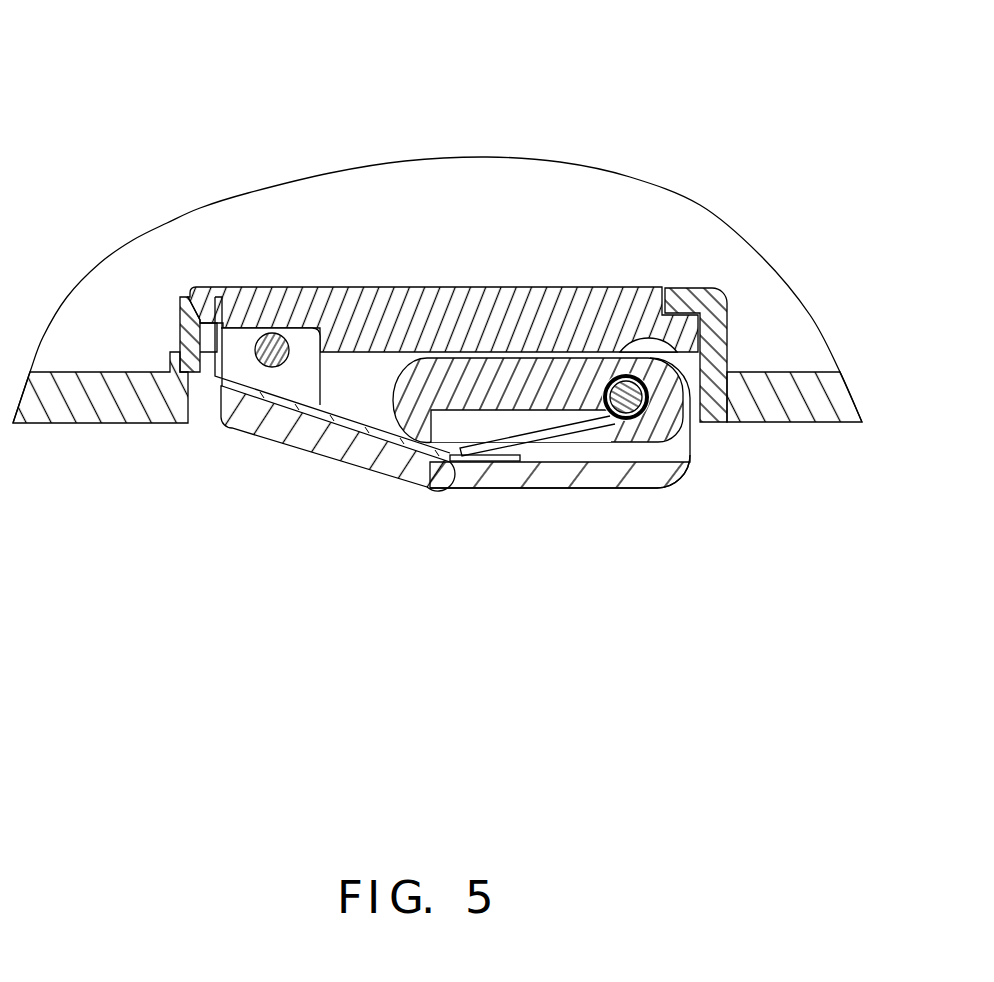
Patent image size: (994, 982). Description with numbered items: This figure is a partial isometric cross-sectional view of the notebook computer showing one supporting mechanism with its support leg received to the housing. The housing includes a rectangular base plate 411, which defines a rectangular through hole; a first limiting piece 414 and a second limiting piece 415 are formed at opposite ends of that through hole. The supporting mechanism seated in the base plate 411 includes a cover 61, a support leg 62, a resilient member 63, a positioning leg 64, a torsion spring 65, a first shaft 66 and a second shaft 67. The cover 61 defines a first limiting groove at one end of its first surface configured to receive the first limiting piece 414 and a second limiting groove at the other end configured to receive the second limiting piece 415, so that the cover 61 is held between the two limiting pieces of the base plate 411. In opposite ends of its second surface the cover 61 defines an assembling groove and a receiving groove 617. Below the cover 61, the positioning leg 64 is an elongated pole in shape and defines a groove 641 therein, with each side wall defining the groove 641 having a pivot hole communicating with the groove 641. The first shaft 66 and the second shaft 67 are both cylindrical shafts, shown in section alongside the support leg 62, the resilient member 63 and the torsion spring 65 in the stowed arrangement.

The base plate 411 is at (783, 400).
The first limiting piece 414 is at (713, 303).
The second limiting piece 415 is at (182, 310).
The cover 61 is at (387, 303).
The receiving groove 617 is at (645, 347).
The support leg 62 is at (390, 460).
The resilient member 63 is at (357, 427).
The positioning leg 64 is at (510, 383).
The groove 641 is at (448, 428).
The torsion spring 65 is at (582, 430).
The first shaft 66 is at (263, 367).
The second shaft 67 is at (635, 422).